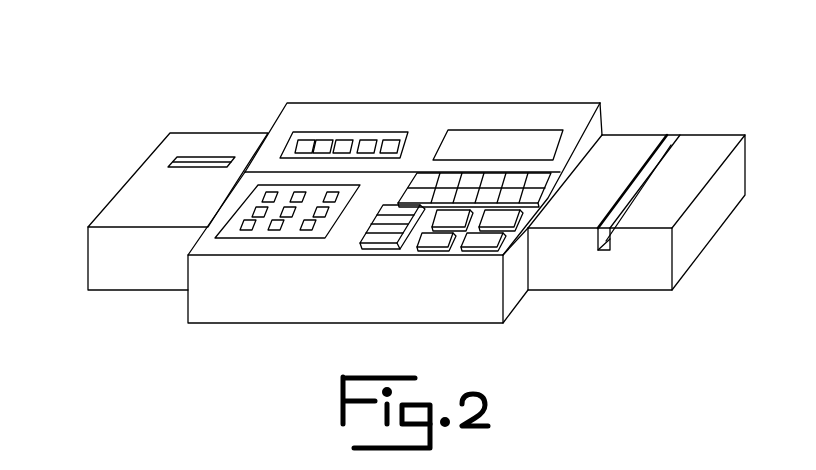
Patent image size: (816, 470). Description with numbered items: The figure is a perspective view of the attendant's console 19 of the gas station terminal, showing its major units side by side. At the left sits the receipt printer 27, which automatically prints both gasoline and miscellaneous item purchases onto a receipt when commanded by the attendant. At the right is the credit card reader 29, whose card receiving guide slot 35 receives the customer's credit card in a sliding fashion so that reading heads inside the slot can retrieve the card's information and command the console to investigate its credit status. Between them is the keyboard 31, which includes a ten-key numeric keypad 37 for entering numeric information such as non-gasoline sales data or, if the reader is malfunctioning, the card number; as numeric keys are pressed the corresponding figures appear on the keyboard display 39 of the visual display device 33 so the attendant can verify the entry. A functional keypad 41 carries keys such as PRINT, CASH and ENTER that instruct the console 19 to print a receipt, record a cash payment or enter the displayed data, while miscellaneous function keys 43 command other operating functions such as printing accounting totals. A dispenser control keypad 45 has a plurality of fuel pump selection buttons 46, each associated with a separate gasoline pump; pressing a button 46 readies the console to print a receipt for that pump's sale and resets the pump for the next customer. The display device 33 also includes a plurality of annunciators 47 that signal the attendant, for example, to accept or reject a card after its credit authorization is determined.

The console 19 is at (477, 88).
The receipt printer 27 is at (135, 172).
The credit card reader 29 is at (708, 228).
The keyboard 31 is at (243, 257).
The visual display device 33 is at (308, 108).
The card receiving guide slot 35 is at (652, 168).
The ten-key numeric keypad 37 is at (555, 172).
The keyboard display 39 is at (513, 137).
The functional keypad 41 is at (453, 252).
The miscellaneous function keys 43 is at (390, 250).
The dispenser control keypad 45 is at (278, 238).
The fuel pump selection button 46 is at (310, 229).
The annunciator 47 is at (311, 140).